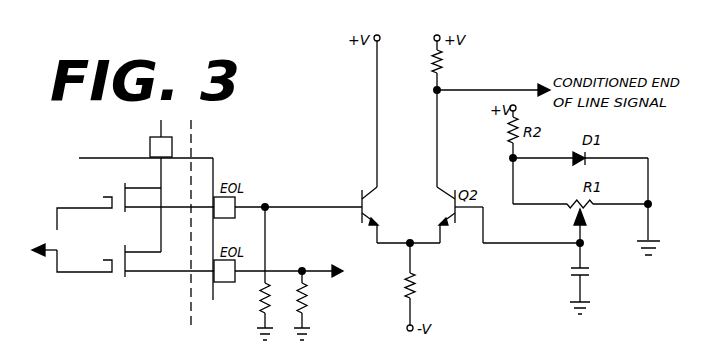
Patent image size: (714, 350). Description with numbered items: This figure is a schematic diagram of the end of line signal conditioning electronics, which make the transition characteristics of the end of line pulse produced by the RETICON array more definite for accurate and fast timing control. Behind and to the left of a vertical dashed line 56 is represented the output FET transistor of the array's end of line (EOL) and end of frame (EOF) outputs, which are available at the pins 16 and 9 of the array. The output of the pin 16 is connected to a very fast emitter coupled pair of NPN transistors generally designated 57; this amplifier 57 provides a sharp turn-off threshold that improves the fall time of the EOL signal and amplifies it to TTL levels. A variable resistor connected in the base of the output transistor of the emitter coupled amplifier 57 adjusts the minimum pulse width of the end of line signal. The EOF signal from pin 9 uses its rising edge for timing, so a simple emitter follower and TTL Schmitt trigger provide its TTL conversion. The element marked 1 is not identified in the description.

The terminal block 1 is at (161, 138).
The pin 9 is at (224, 271).
The pin 16 is at (224, 207).
The vertical dashed line 56 is at (192, 133).
The emitter coupled pair of NPN transistors 57 is at (366, 182).